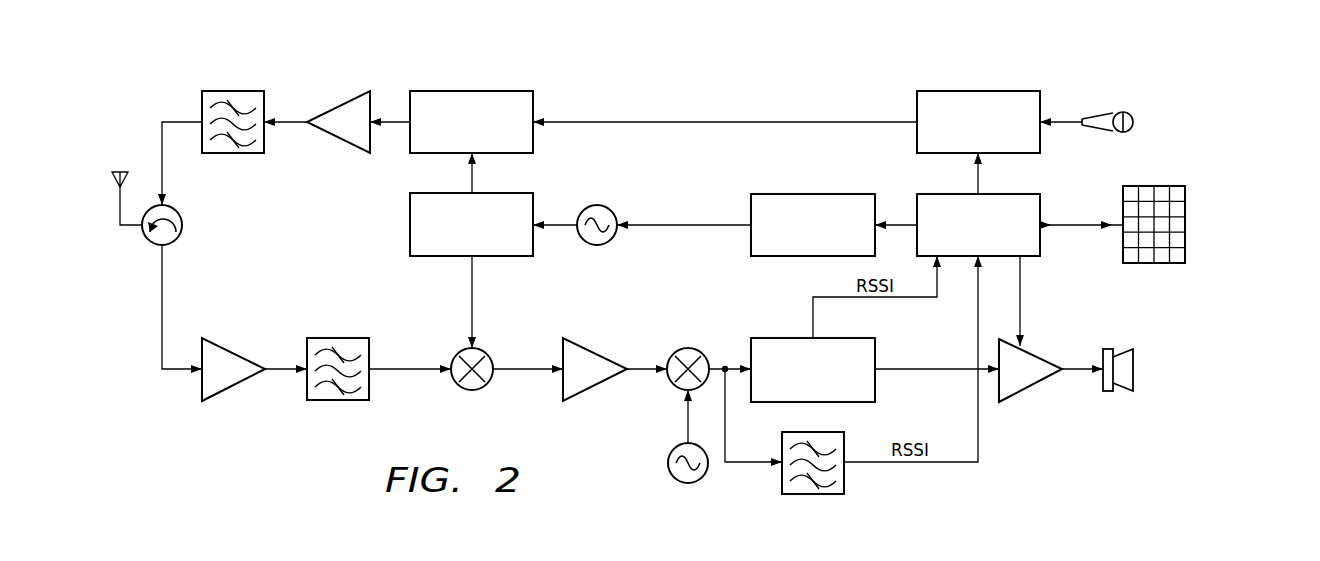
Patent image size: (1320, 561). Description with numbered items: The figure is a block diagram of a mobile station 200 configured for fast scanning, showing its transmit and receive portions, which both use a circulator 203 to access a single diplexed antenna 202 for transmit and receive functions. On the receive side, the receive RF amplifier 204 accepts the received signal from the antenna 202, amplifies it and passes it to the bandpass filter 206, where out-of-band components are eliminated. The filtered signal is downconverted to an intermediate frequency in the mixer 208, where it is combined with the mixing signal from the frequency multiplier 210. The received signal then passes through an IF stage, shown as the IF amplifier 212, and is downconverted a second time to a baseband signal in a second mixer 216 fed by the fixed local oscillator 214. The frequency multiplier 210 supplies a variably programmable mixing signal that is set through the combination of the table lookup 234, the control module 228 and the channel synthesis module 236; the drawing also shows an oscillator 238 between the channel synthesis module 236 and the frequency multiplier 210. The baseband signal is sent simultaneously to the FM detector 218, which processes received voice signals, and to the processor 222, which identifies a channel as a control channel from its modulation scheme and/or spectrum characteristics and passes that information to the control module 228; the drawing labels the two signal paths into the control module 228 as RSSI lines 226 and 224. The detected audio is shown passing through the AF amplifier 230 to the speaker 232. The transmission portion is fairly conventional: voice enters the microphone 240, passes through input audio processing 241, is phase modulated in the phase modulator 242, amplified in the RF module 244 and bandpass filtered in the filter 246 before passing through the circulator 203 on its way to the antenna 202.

The mobile station 200 is at (1238, 161).
The diplexed antenna 202 is at (119, 172).
The circulator 203 is at (183, 229).
The receive RF amplifier 204 is at (236, 387).
The bandpass filter 206 is at (329, 402).
The mixer 208 is at (470, 391).
The frequency multiplier 210 is at (434, 258).
The IF amplifier 212 is at (598, 389).
The fixed local oscillator 214 is at (670, 473).
The mixer 216 is at (688, 347).
The FM detector 218 is at (771, 337).
The processor 222 is at (845, 480).
The RSSI signal line 224 is at (950, 463).
The RSSI signal line 226 is at (903, 298).
The control module 228 is at (1041, 203).
The AF amplifier 230 is at (1030, 387).
The speaker 232 is at (1135, 375).
The table lookup 234 is at (1186, 250).
The channel synthesis module 236 is at (771, 194).
The oscillator 238 is at (592, 246).
The microphone 240 is at (1135, 122).
The input audio processing 241 is at (917, 104).
The phase modulator 242 is at (534, 104).
The RF module 244 is at (336, 150).
The filter 246 is at (202, 101).